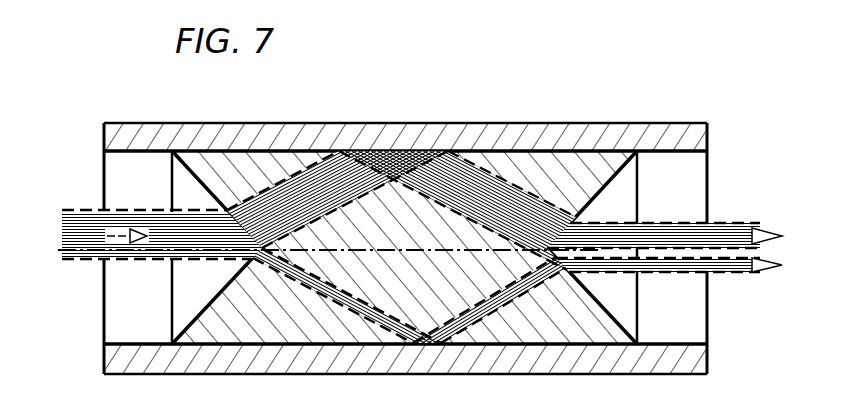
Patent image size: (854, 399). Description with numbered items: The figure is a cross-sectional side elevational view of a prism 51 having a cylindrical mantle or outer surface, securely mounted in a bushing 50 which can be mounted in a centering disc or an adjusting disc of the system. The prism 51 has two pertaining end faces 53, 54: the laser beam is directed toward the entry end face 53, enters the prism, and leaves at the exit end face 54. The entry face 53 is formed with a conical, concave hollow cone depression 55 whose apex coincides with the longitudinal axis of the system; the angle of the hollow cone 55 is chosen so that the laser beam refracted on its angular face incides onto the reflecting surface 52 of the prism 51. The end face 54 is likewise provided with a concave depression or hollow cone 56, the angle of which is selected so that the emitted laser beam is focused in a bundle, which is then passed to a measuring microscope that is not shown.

The bushing 50 is at (585, 133).
The prism 51 is at (547, 177).
The reflecting surface 52 is at (495, 155).
The end face 53 is at (152, 177).
The end face 54 is at (658, 179).
The hollow cone depression 55 is at (185, 304).
The hollow cone 56 is at (620, 305).